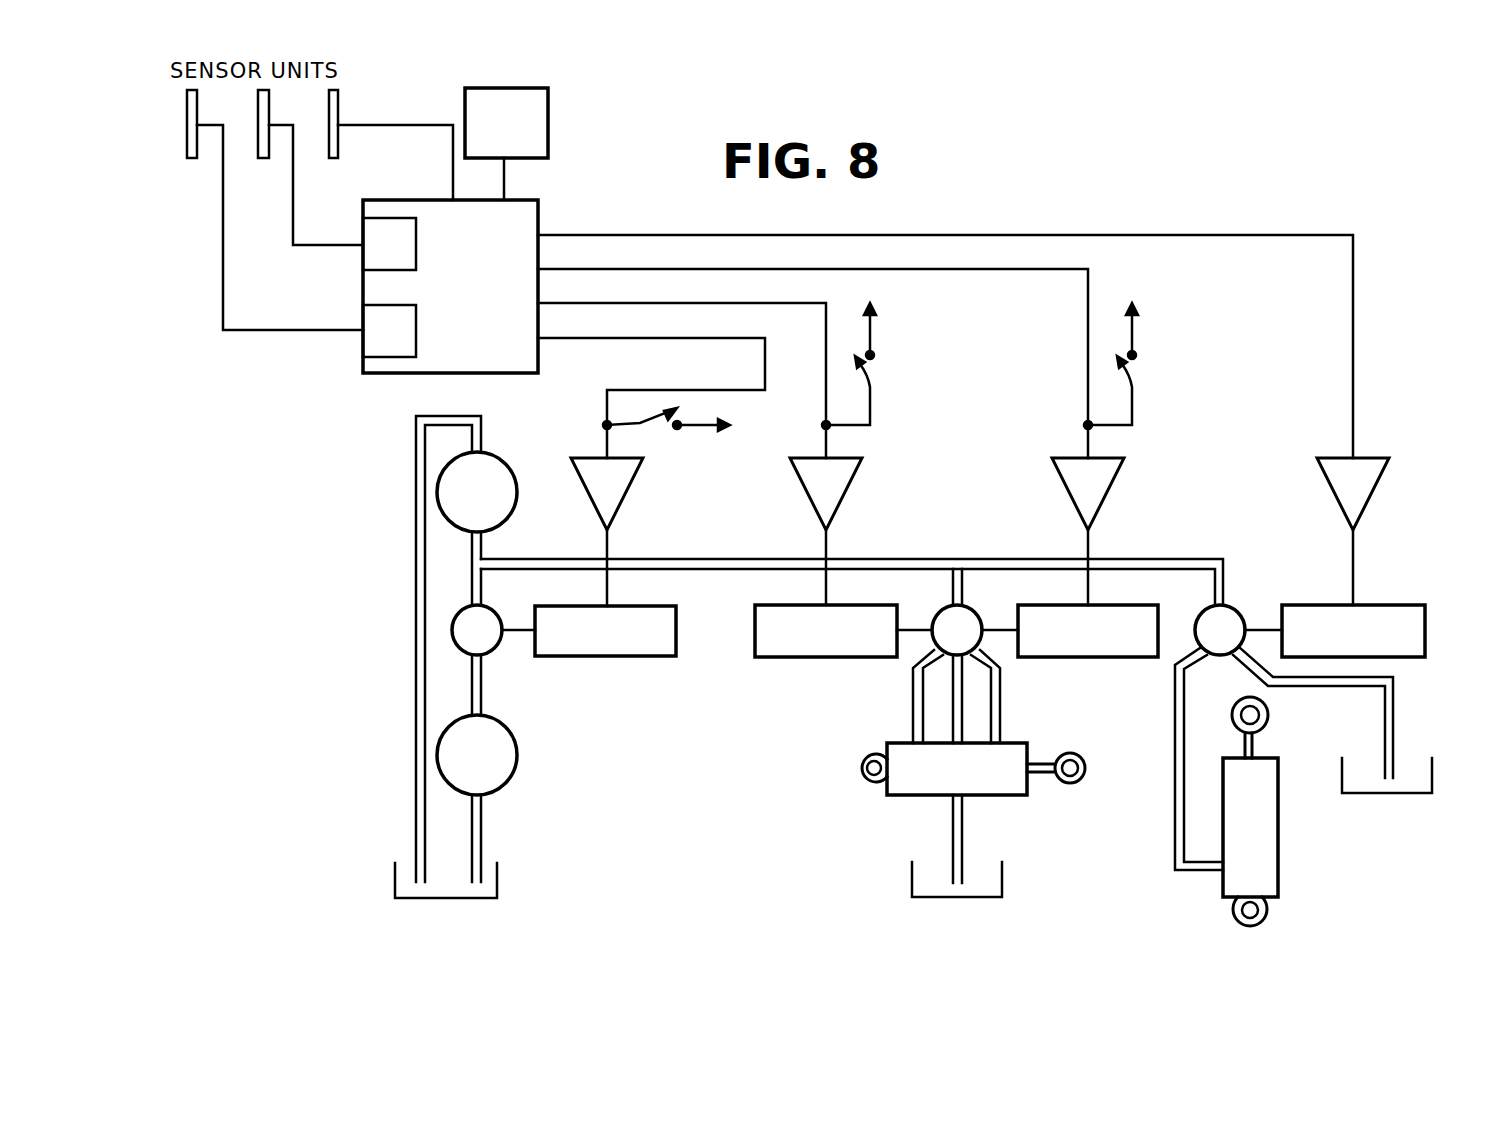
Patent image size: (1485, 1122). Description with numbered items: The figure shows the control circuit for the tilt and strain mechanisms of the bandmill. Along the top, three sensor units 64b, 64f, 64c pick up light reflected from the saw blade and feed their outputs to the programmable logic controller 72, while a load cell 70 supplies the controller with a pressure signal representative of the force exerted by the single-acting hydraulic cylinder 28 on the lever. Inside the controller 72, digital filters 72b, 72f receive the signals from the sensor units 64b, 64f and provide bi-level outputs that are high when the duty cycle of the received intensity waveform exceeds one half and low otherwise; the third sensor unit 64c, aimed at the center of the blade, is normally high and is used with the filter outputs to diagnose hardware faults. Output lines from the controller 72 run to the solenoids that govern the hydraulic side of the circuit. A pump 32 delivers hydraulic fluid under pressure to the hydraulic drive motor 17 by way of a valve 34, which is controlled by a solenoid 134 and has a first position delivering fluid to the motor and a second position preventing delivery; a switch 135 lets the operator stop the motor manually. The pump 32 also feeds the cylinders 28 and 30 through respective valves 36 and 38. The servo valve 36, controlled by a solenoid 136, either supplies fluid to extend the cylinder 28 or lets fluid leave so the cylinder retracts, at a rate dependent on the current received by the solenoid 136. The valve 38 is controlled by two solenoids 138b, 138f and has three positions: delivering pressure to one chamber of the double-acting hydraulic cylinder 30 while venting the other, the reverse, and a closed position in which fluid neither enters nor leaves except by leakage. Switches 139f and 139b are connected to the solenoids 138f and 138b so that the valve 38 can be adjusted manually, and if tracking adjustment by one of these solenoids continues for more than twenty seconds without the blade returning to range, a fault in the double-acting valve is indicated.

The sensor unit 64b is at (185, 107).
The sensor unit 64f is at (270, 150).
The third sensor unit 64c is at (338, 133).
The load cell 70 is at (552, 142).
The programmable logic controller 72 is at (422, 298).
The digital filter 72f is at (416, 263).
The digital filter 72b is at (416, 350).
The switch 135 is at (657, 418).
The switch 139b is at (920, 365).
The switch 139f is at (1182, 365).
The pump 32 is at (518, 487).
The valve 34 is at (500, 641).
The hydraulic drive motor 17 is at (517, 778).
The solenoid 134 is at (580, 656).
The solenoid 138b is at (848, 657).
The valve 38 is at (975, 613).
The solenoid 138f is at (1045, 657).
The double-acting hydraulic cylinder 30 is at (924, 795).
The servo valve 36 is at (1248, 618).
The solenoid 136 is at (1373, 605).
The single-acting hydraulic cylinder 28 is at (1278, 828).